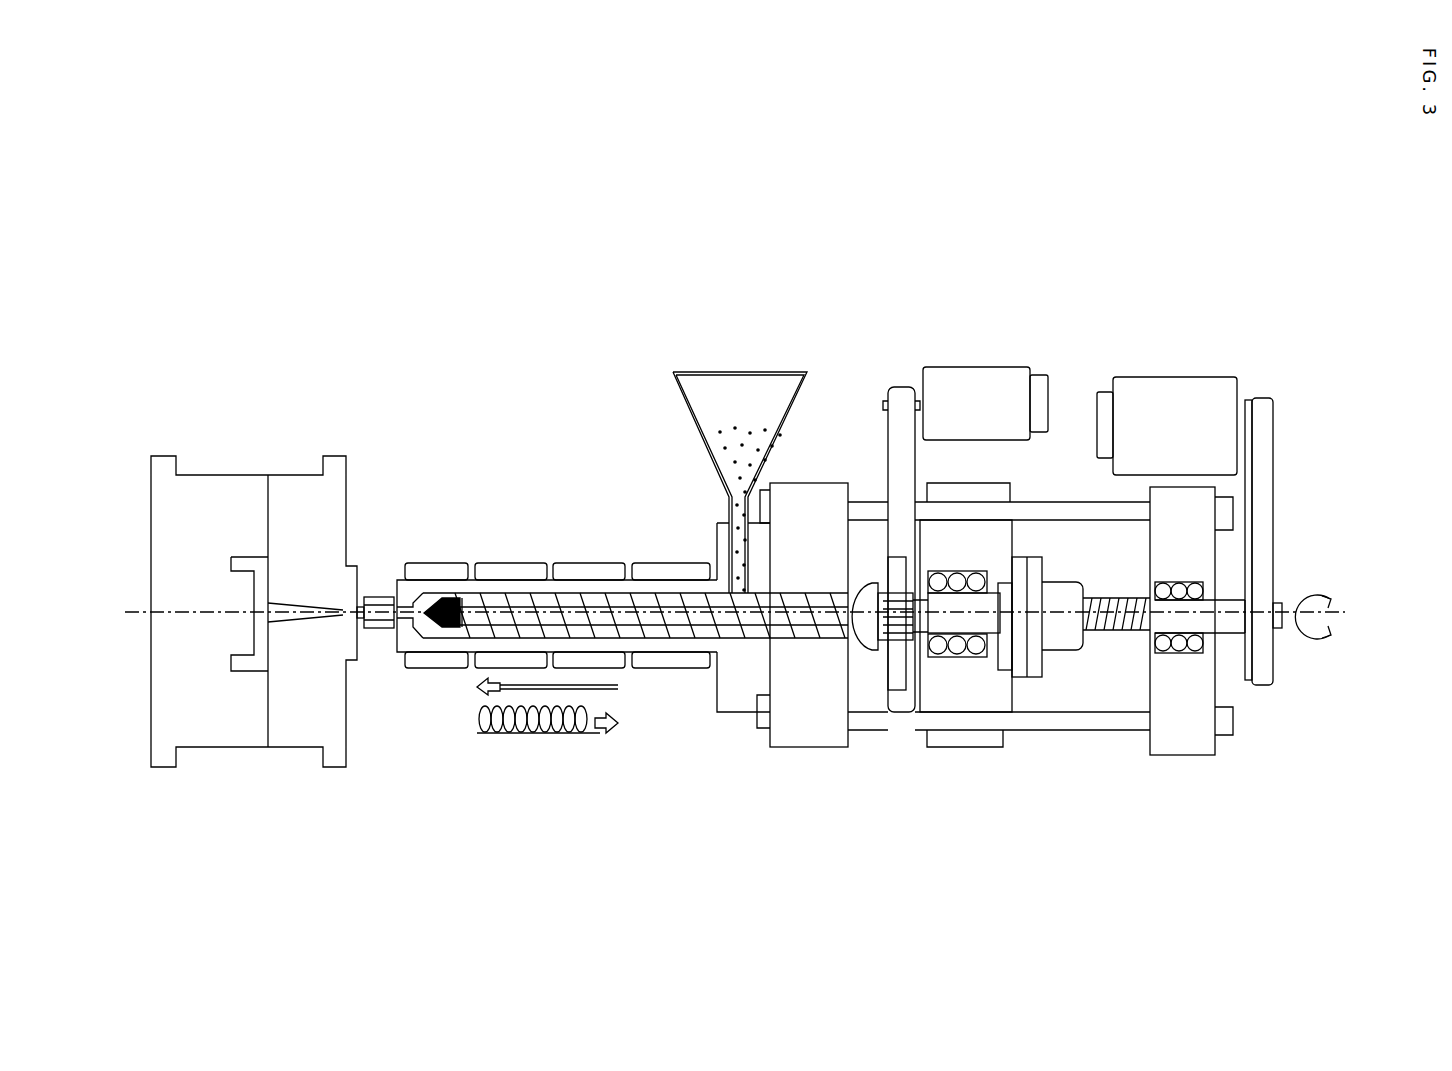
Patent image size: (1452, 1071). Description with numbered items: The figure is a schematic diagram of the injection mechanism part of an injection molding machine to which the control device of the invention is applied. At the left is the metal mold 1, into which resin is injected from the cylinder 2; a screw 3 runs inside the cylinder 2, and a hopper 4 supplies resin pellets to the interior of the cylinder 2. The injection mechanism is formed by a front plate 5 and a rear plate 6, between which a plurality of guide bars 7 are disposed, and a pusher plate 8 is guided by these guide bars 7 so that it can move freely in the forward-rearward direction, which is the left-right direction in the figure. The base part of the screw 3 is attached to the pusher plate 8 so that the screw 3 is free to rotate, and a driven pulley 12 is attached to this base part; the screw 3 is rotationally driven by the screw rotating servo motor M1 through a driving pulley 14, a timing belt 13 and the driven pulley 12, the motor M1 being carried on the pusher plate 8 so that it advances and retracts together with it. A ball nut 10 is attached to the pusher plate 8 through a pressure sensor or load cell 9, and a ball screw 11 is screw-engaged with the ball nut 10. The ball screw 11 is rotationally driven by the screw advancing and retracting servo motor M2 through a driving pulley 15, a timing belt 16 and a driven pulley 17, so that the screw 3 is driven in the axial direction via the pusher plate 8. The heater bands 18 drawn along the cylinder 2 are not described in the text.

The metal mold 1 is at (248, 475).
The cylinder 2 is at (533, 563).
The screw 3 is at (658, 638).
The hopper 4 is at (687, 412).
The front plate 5 is at (803, 730).
The rear plate 6 is at (1177, 747).
The guide bars 7 is at (1030, 503).
The pusher plate 8 is at (943, 738).
The pressure sensor (load cell) 9 is at (1003, 667).
The ball nut 10 is at (1081, 650).
The ball screw 11 is at (1103, 633).
The driven pulley 12 is at (375, 630).
The timing belt 13 is at (888, 467).
The driving pulley 14 is at (887, 397).
The driving pulley 15 is at (1277, 407).
The timing belt 16 is at (1277, 487).
The driven pulley 17 is at (1277, 567).
The heater 18 is at (488, 563).
The screw rotating servo motor M1 is at (973, 367).
The screw advancing and retracting servo motor M2 is at (1158, 377).